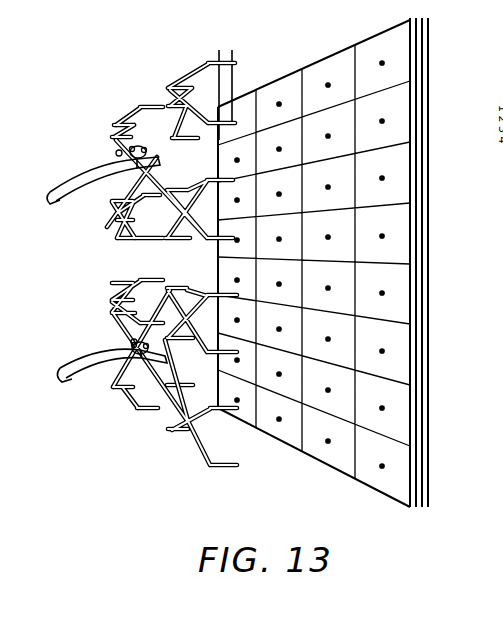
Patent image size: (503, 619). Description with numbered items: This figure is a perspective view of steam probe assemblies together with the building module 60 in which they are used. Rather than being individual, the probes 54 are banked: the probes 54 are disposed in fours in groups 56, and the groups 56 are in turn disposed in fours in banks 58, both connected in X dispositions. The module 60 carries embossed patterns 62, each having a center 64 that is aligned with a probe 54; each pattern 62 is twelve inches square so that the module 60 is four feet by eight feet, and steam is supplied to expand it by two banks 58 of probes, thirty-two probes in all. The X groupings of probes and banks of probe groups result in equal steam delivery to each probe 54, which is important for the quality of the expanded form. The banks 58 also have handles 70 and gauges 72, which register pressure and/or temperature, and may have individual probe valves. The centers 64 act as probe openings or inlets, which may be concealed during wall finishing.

The probes 54 is at (207, 62).
The groups 56 is at (180, 86).
The banks 58 is at (118, 153).
The module 60 is at (430, 383).
The patterns 62 is at (362, 92).
The center 64 is at (326, 84).
The handles 70 is at (100, 185).
The gauges 72 is at (150, 155).